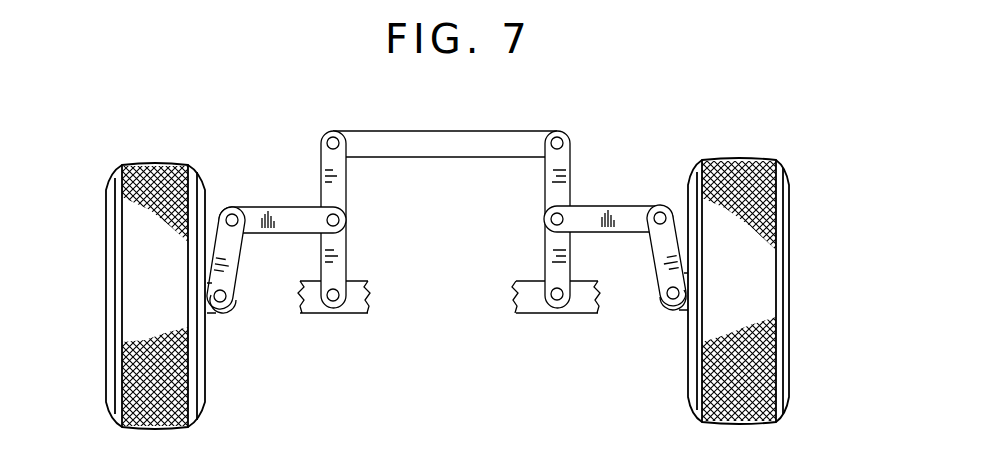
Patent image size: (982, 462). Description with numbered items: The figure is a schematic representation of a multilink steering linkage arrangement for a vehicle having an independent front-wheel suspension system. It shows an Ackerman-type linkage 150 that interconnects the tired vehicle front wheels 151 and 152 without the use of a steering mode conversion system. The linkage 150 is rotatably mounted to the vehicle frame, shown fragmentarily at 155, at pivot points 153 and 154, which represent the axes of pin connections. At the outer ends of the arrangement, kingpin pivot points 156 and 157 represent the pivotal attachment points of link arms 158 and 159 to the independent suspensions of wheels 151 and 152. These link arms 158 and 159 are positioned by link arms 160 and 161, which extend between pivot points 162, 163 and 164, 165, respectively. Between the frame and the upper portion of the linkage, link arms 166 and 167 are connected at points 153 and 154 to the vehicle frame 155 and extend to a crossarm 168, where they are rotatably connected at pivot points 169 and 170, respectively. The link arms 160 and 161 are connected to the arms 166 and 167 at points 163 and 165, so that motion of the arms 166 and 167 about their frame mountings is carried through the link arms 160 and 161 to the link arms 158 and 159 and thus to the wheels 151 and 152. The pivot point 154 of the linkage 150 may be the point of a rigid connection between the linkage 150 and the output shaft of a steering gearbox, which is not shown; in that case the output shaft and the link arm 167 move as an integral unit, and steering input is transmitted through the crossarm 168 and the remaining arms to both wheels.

The Ackerman-type linkage 150 is at (511, 131).
The vehicle front wheel 151 is at (113, 395).
The vehicle front wheel 152 is at (783, 395).
The pivot point 153 is at (333, 302).
The pivot point 154 is at (549, 290).
The vehicle frame 155 is at (360, 310).
The kingpin pivot point 156 is at (224, 303).
The kingpin pivot point 157 is at (672, 300).
The link arm 158 is at (236, 258).
The link arm 159 is at (657, 250).
The link arm 160 is at (300, 208).
The link arm 161 is at (617, 207).
The pivot point 162 is at (238, 214).
The pivot point 163 is at (340, 223).
The pivot point 164 is at (664, 210).
The pivot point 165 is at (549, 219).
The link arm 166 is at (340, 180).
The link arm 167 is at (547, 180).
The crossarm 168 is at (426, 135).
The pivot point 169 is at (329, 139).
The pivot point 170 is at (562, 145).